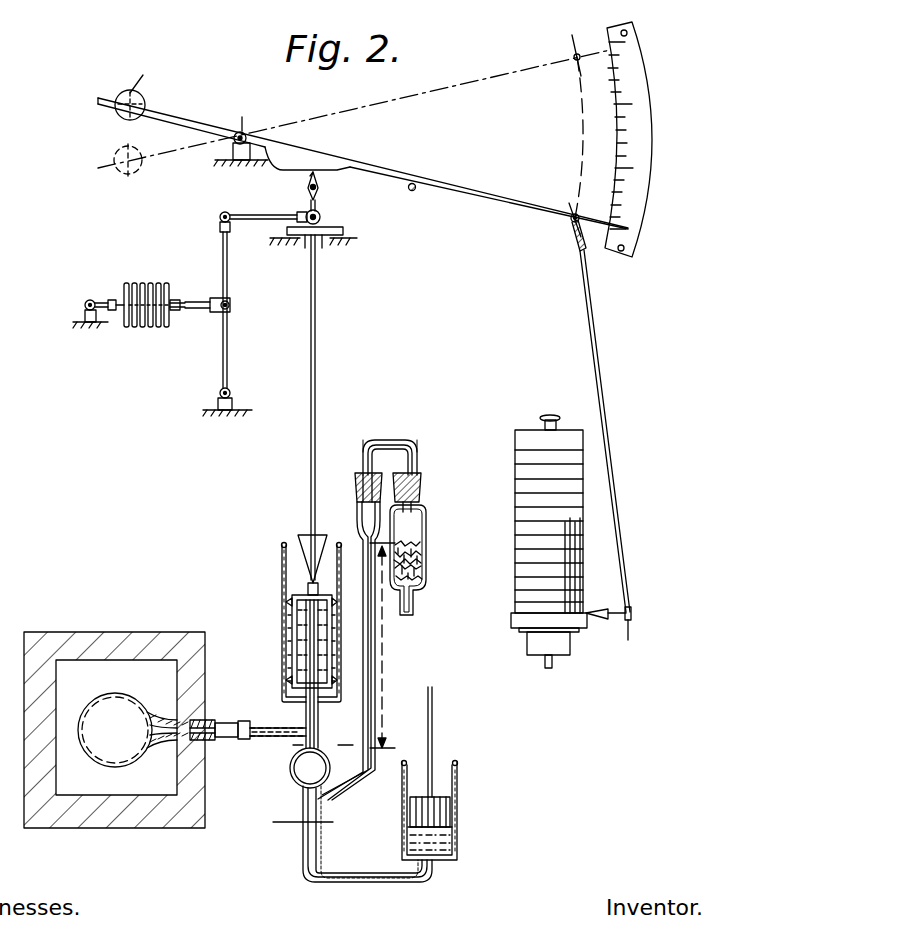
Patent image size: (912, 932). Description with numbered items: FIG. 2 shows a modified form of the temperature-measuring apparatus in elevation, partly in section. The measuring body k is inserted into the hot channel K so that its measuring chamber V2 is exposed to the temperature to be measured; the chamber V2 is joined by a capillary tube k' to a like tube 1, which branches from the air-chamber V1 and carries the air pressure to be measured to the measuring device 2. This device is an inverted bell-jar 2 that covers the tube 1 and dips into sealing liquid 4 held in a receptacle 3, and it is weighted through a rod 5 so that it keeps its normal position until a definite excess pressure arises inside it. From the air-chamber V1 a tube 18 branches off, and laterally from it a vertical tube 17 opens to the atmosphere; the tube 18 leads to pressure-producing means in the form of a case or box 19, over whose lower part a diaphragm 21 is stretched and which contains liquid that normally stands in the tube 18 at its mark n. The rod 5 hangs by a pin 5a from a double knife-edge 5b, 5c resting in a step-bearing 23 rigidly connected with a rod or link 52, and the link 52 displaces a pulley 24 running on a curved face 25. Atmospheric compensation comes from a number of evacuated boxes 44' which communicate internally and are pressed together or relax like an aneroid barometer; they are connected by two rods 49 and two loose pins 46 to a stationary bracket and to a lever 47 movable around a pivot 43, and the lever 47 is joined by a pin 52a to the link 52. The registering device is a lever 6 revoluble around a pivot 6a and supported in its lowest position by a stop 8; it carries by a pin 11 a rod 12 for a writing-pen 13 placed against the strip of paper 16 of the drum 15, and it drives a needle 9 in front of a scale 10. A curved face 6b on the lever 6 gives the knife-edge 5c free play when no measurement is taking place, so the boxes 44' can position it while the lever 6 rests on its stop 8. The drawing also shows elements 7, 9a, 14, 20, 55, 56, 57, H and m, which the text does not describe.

The capillary tube 1 is at (318, 708).
The inverted bell-jar 2 is at (318, 594).
The receptacle 3 is at (283, 663).
The sealing liquid 4 is at (292, 628).
The rod 5 is at (319, 407).
The pin 5a is at (318, 186).
The knife-edge 5b is at (316, 200).
The knife-edge 5c is at (302, 177).
The lever 6 is at (363, 163).
The pivot 6a is at (245, 134).
The curved face 6b is at (307, 158).
The counterweight 7 is at (140, 98).
The stop 8 is at (410, 198).
The needle 9 is at (582, 220).
The rod cone 9a is at (299, 538).
The scale 10 is at (622, 145).
The pin 11 is at (571, 225).
The rod 12 is at (605, 431).
The writing-pen 13 is at (608, 614).
The base 14 is at (548, 650).
The drum 15 is at (512, 624).
The strip of paper 16 is at (515, 527).
The vertical tube 17 is at (366, 730).
The tube 18 is at (367, 834).
The case or box 19 is at (404, 790).
The liquid 20 is at (452, 846).
The diaphragm 21 is at (451, 810).
The step-bearing 23 is at (300, 212).
The pulley 24 is at (321, 216).
The curved face 25 is at (344, 230).
The pivot 43 is at (230, 390).
The evacuated boxes 44' is at (146, 291).
The loose pins 46 is at (91, 299).
The lever 47 is at (229, 263).
The rods 49 is at (104, 315).
The rod or link 52 is at (262, 221).
The pin 52a is at (228, 212).
The U tube 55 is at (390, 448).
The bottle 56 is at (420, 544).
The granular material 57 is at (423, 556).
The head height H is at (382, 645).
The hot channel K is at (114, 730).
The air-chamber V1 is at (292, 774).
The measuring chamber V2 is at (133, 730).
The measuring body k is at (205, 743).
The capillary tube k' is at (260, 716).
The level m is at (323, 740).
The mark n is at (303, 812).